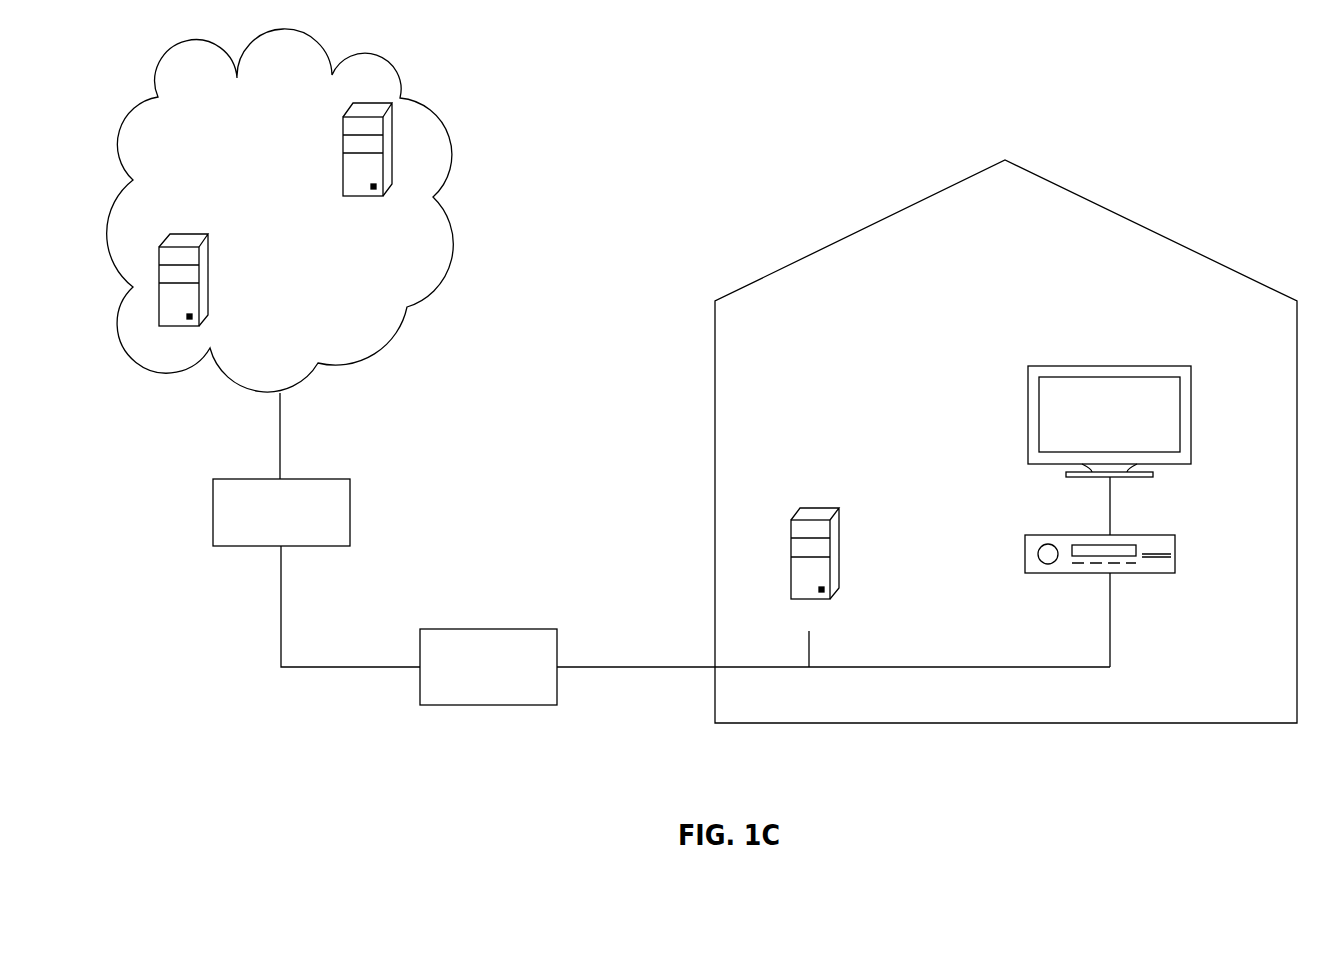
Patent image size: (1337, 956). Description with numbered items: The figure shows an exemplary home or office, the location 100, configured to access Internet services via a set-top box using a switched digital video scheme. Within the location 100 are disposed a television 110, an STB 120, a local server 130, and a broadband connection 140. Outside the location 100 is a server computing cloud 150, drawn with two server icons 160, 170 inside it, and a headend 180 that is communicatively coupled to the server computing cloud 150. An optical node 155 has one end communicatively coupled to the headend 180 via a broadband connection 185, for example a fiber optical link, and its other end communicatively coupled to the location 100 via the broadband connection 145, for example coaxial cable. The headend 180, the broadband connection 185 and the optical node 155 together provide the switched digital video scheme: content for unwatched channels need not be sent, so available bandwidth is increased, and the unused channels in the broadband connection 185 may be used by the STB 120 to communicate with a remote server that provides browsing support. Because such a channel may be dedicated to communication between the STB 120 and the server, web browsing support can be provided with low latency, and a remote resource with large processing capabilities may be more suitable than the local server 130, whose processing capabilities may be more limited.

The location 100 is at (1297, 417).
The television 110 is at (1191, 393).
The STB 120 is at (1175, 545).
The local server 130 is at (839, 535).
The broadband connection 140 is at (957, 667).
The broadband connection 145 is at (650, 667).
The server computing cloud 150 is at (453, 235).
The optical node 155 is at (507, 629).
The cloud server 160 is at (208, 273).
The cloud server 170 is at (392, 142).
The headend 180 is at (350, 505).
The broadband connection 185 is at (322, 667).